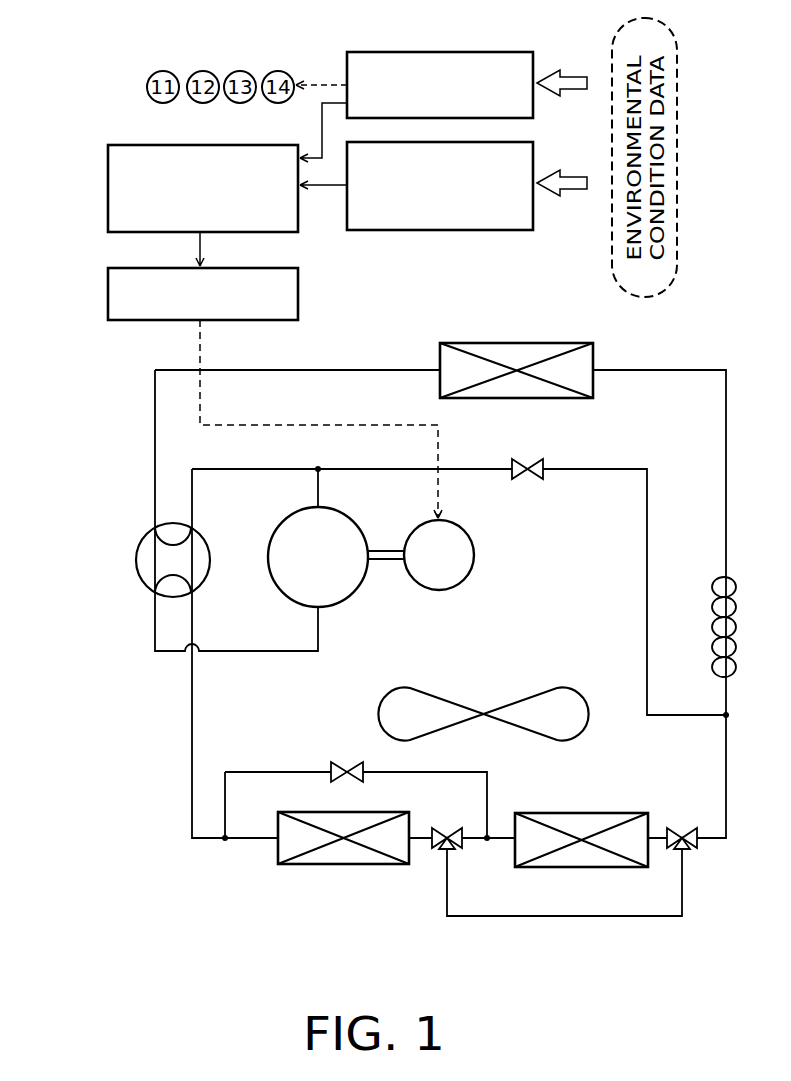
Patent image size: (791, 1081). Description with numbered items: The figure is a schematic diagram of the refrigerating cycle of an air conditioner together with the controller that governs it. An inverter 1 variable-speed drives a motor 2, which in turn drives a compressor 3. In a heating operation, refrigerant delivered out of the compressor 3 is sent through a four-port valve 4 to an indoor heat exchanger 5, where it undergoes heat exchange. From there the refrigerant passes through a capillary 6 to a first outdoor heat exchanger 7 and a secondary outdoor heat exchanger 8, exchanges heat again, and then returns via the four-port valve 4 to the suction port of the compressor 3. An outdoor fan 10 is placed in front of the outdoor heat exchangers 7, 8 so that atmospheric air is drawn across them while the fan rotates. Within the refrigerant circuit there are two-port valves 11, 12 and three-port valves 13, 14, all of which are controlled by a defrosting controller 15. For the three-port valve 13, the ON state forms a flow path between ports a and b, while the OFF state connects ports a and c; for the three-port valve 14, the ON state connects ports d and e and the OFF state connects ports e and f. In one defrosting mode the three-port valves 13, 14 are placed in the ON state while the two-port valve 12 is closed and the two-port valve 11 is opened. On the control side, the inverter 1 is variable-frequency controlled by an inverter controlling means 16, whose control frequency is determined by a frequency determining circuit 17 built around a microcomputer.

The inverter 1 is at (300, 296).
The motor 2 is at (474, 545).
The compressor 3 is at (352, 517).
The four-port valve 4 is at (210, 557).
The indoor heat exchanger 5 is at (512, 343).
The capillary 6 is at (736, 612).
The first outdoor heat exchanger 7 is at (583, 813).
The secondary outdoor heat exchanger 8 is at (328, 865).
The outdoor fan 10 is at (452, 697).
The two-port valve 11 is at (530, 458).
The two-port valve 12 is at (346, 762).
The three-port valve 13 is at (683, 828).
The three-port valve 14 is at (448, 828).
The defrosting controller 15 is at (428, 52).
The inverter controlling means 16 is at (108, 200).
The frequency determining circuit 17 is at (455, 230).